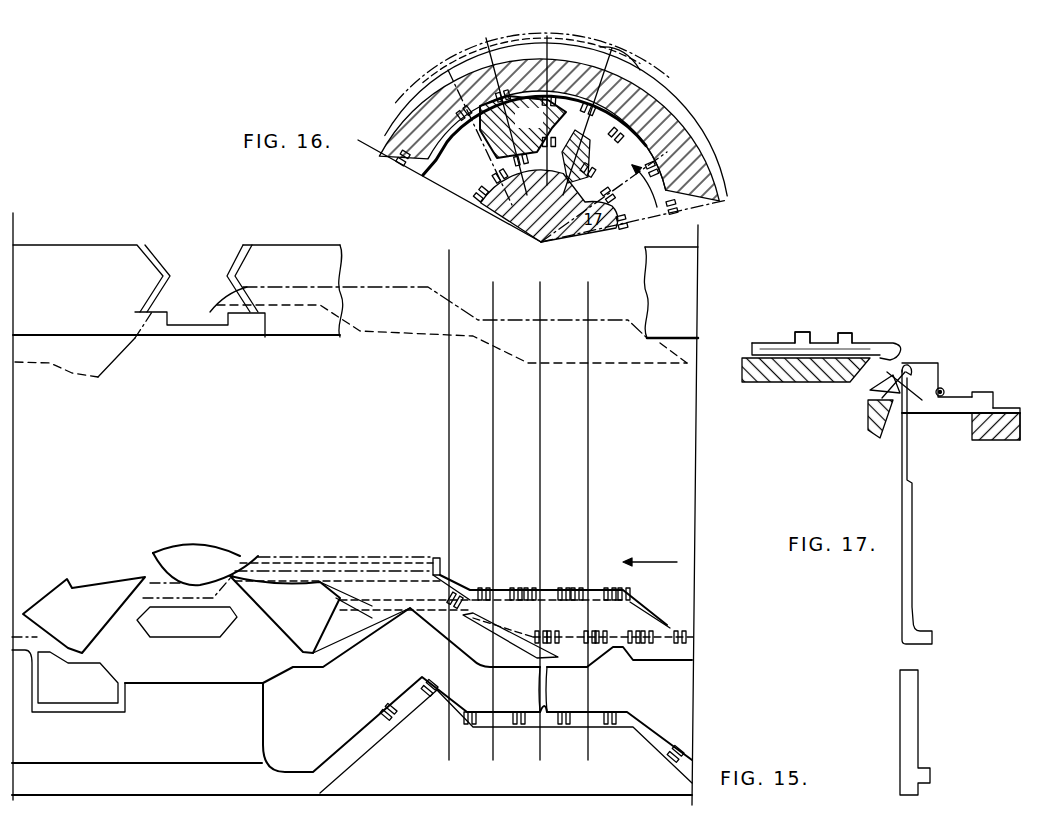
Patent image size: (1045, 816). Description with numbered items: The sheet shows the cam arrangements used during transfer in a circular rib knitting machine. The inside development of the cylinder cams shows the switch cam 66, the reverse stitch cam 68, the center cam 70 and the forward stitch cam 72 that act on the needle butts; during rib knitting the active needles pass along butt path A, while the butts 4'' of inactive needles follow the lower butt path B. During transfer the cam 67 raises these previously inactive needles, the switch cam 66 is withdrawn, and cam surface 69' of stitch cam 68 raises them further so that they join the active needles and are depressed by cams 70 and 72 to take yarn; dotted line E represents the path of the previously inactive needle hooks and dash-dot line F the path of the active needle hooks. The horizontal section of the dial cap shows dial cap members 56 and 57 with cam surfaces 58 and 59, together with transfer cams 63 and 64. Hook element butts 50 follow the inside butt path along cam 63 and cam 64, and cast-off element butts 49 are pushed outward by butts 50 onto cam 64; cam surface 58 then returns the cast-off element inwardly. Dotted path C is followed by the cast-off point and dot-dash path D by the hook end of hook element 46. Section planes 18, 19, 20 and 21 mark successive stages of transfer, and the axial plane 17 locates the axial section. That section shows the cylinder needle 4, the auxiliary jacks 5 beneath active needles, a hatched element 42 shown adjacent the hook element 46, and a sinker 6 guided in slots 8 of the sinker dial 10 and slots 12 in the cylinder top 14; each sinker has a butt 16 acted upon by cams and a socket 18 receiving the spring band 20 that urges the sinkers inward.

In FIG. 17, the cylinder needle 4 is at (917, 504).
In FIG. 15, the needle butts 4'' is at (613, 626).
In FIG. 17, the auxiliary jacks 5 is at (912, 735).
In FIG. 17, the sinker 6 is at (927, 366).
In FIG. 17, the slots 8 is at (1006, 409).
In FIG. 17, the sinker dial 10 is at (975, 428).
In FIG. 17, the slots 12 is at (876, 400).
In FIG. 17, the cylinder top 14 is at (875, 428).
In FIG. 17, the butt 16 is at (986, 386).
In FIG. 16, the axial plane 17 is at (667, 152).
In FIG. 16, the socket 18 is at (594, 115).
In FIG. 15, the socket 18 is at (601, 282).
In FIG. 16, the section line 19 is at (543, 108).
In FIG. 15, the section line 19 is at (553, 282).
In FIG. 16, the spring band 20 is at (509, 115).
In FIG. 15, the spring band 20 is at (506, 282).
In FIG. 17, the spring band 20 is at (944, 389).
In FIG. 16, the section line 21 is at (445, 102).
In FIG. 15, the section line 21 is at (462, 250).
In FIG. 17, the cam plate 42 is at (803, 378).
In FIG. 17, the hook element 46 is at (778, 350).
In FIG. 16, the cast-off element butt 49 is at (673, 213).
In FIG. 17, the cast-off element butt 49 is at (850, 335).
In FIG. 16, the hook element butt 50 is at (620, 229).
In FIG. 17, the hook element butt 50 is at (806, 333).
In FIG. 16, the dial cap member 56 is at (403, 158).
In FIG. 16, the dial cap member 57 is at (528, 231).
In FIG. 16, the cam surface 58 is at (450, 139).
In FIG. 16, the cam surface 59 is at (570, 226).
In FIG. 16, the transfer cam 63 is at (591, 153).
In FIG. 16, the transfer cam 64 is at (537, 127).
In FIG. 15, the switch cam 66 is at (385, 597).
In FIG. 15, the cam 67 is at (492, 637).
In FIG. 15, the reverse stitch cam 68 is at (298, 612).
In FIG. 15, the cam surface 69' is at (346, 604).
In FIG. 15, the center cam 70 is at (190, 560).
In FIG. 15, the forward stitch cam 72 is at (60, 617).
In FIG. 15, the butt path A is at (593, 590).
In FIG. 15, the butt path B is at (617, 652).
In FIG. 16, the dotted path C is at (714, 191).
In FIG. 16, the dot-dash path D is at (726, 178).
In FIG. 15, the dotted line E is at (505, 350).
In FIG. 15, the dash-dot line F is at (566, 320).